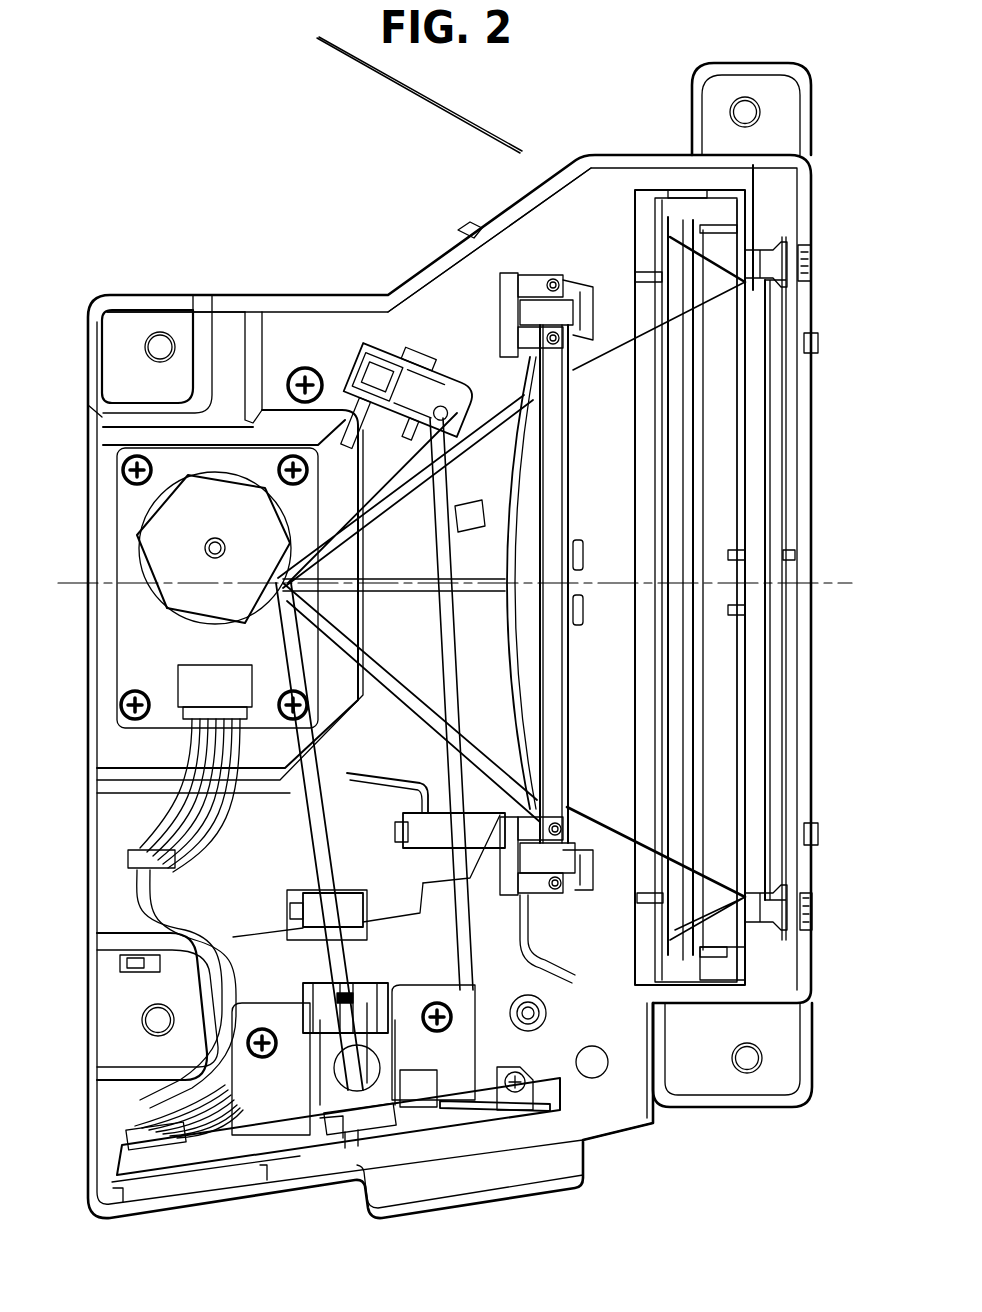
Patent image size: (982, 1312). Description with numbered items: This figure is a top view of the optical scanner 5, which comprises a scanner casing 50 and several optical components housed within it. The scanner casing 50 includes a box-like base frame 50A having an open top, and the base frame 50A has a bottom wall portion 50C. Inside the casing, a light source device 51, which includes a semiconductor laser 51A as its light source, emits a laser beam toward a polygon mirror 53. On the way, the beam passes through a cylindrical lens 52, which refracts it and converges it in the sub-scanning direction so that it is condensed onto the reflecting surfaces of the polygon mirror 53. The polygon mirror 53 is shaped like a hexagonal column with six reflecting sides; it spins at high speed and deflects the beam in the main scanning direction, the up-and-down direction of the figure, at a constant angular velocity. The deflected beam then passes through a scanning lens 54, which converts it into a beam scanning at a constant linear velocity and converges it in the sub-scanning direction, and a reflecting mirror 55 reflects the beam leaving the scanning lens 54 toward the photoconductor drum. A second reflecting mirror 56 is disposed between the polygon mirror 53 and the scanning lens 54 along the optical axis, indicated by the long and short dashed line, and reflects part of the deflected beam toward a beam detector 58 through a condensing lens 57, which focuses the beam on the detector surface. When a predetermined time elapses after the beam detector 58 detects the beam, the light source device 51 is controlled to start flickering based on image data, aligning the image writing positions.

The optical scanner 5 is at (180, 177).
The scanner casing 50 is at (290, 295).
The base frame 50A is at (290, 296).
The bottom wall portion 50C is at (342, 325).
The light source device 51 is at (233, 1108).
The semiconductor laser 51A is at (355, 1120).
The cylindrical lens 52 is at (318, 898).
The polygon mirror 53 is at (140, 562).
The scanning lens 54 is at (575, 478).
The reflecting mirror 55 is at (766, 524).
The reflecting mirror 56 is at (437, 395).
The condensing lens 57 is at (440, 830).
The beam detector 58 is at (470, 1112).